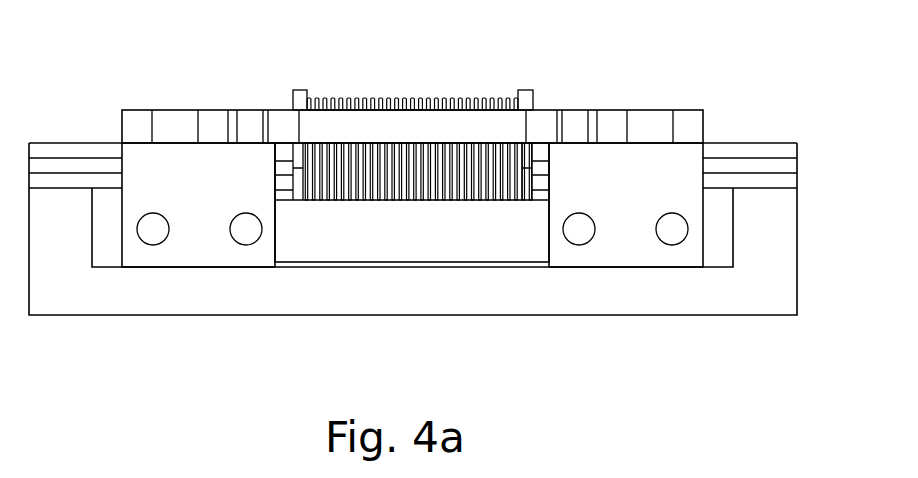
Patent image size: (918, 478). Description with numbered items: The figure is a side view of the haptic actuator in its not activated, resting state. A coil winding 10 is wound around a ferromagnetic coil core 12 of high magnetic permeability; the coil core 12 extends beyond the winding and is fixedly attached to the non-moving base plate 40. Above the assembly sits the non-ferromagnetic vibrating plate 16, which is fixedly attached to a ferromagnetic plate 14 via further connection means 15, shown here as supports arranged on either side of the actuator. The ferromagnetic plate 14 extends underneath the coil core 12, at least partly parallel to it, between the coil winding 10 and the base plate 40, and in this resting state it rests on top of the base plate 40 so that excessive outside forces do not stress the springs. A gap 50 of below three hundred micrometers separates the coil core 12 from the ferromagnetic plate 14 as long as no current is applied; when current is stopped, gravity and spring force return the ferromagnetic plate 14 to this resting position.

The coil winding 10 is at (418, 98).
The coil core 12 is at (720, 163).
The ferromagnetic plate 14 is at (413, 238).
The further connection means 15 is at (220, 153).
The vibrating plate 16 is at (138, 117).
The base plate 40 is at (293, 283).
The gap 50 is at (541, 176).